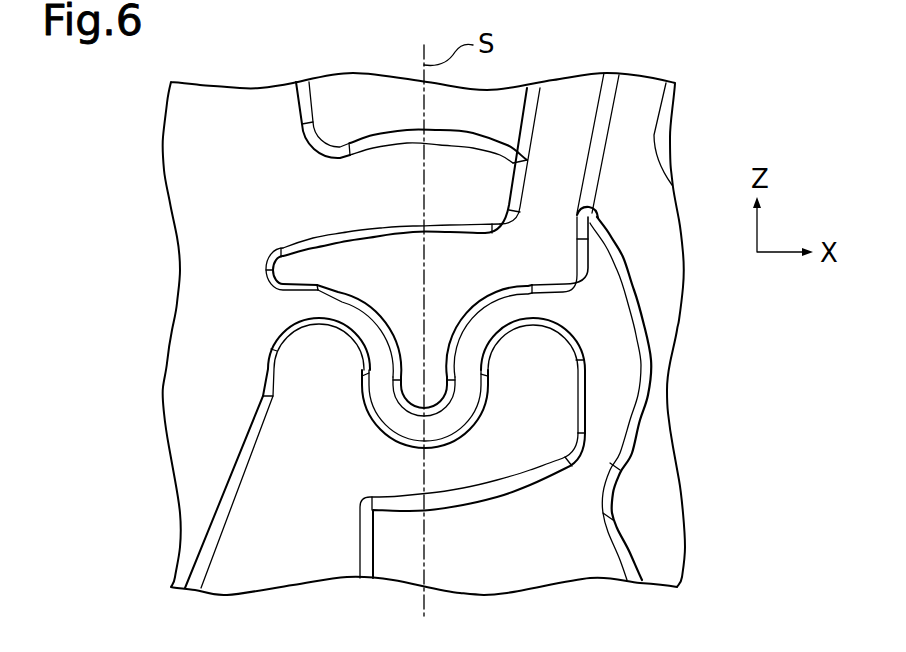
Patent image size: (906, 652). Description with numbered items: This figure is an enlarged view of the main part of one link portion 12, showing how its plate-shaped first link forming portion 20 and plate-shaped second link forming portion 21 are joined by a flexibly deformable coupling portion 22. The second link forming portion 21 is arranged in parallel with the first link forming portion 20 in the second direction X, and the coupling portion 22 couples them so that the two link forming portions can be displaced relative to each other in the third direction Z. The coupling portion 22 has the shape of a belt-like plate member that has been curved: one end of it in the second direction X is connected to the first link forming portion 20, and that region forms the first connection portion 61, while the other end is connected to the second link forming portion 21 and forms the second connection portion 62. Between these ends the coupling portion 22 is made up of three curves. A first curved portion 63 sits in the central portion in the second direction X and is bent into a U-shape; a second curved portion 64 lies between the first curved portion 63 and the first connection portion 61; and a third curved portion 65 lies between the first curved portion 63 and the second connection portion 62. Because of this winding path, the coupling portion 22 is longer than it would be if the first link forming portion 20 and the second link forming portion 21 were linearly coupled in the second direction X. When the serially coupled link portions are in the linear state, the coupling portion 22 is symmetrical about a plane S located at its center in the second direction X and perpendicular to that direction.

The link portion 12 is at (708, 90).
The first link forming portion 20 is at (183, 387).
The second link forming portion 21 is at (618, 387).
The coupling portion 22 is at (424, 367).
The first connection portion 61 is at (290, 310).
The second connection portion 62 is at (558, 310).
The first curved portion 63 is at (450, 443).
The second curved portion 64 is at (372, 299).
The third curved portion 65 is at (480, 300).